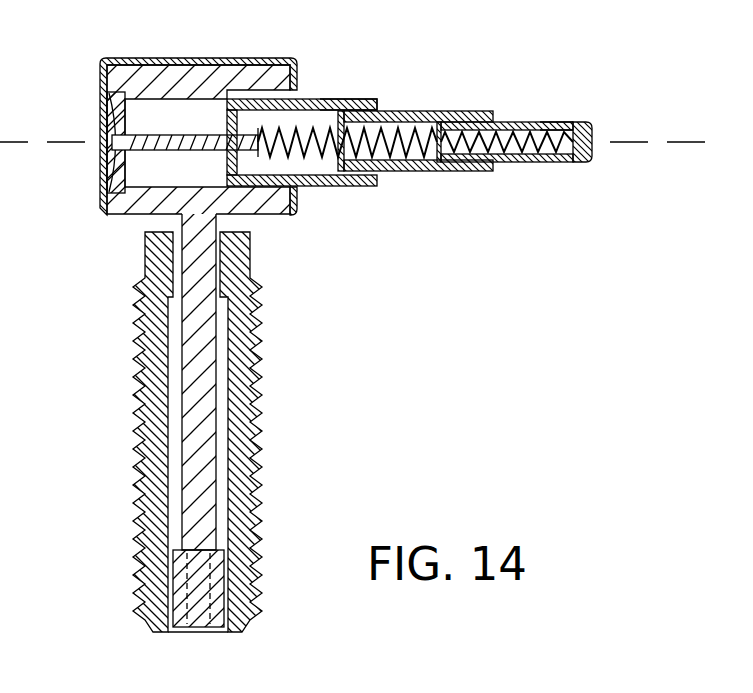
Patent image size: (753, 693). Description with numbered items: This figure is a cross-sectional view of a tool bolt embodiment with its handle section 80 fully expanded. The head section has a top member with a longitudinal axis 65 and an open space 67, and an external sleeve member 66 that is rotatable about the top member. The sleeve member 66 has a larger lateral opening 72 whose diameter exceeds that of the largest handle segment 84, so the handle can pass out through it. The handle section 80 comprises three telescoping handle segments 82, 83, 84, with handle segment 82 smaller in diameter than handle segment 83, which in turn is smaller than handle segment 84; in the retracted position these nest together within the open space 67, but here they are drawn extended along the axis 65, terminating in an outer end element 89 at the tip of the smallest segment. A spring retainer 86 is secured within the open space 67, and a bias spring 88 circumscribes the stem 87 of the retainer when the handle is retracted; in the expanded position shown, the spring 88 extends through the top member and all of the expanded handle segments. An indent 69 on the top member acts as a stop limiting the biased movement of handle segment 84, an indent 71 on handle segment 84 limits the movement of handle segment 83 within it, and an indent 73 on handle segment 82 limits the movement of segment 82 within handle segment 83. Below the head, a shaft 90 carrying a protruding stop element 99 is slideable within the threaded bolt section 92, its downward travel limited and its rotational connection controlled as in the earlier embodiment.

The longitudinal axis 65 is at (677, 142).
The external sleeve member 66 is at (100, 95).
The open space 67 is at (154, 117).
The indent 69 is at (258, 70).
The indent 71 is at (347, 112).
The larger lateral opening 72 is at (330, 94).
The indent 73 is at (480, 122).
The handle section 80 is at (397, 113).
The handle segment 82 is at (557, 163).
The handle segment 83 is at (462, 165).
The handle segment 84 is at (340, 170).
The spring retainer 86 is at (117, 156).
The stem 87 is at (155, 148).
The bias spring 88 is at (557, 123).
The end cap 89 is at (593, 133).
The shaft 90 is at (200, 395).
The bolt section 92 is at (255, 275).
The protruding stop element 99 is at (208, 613).